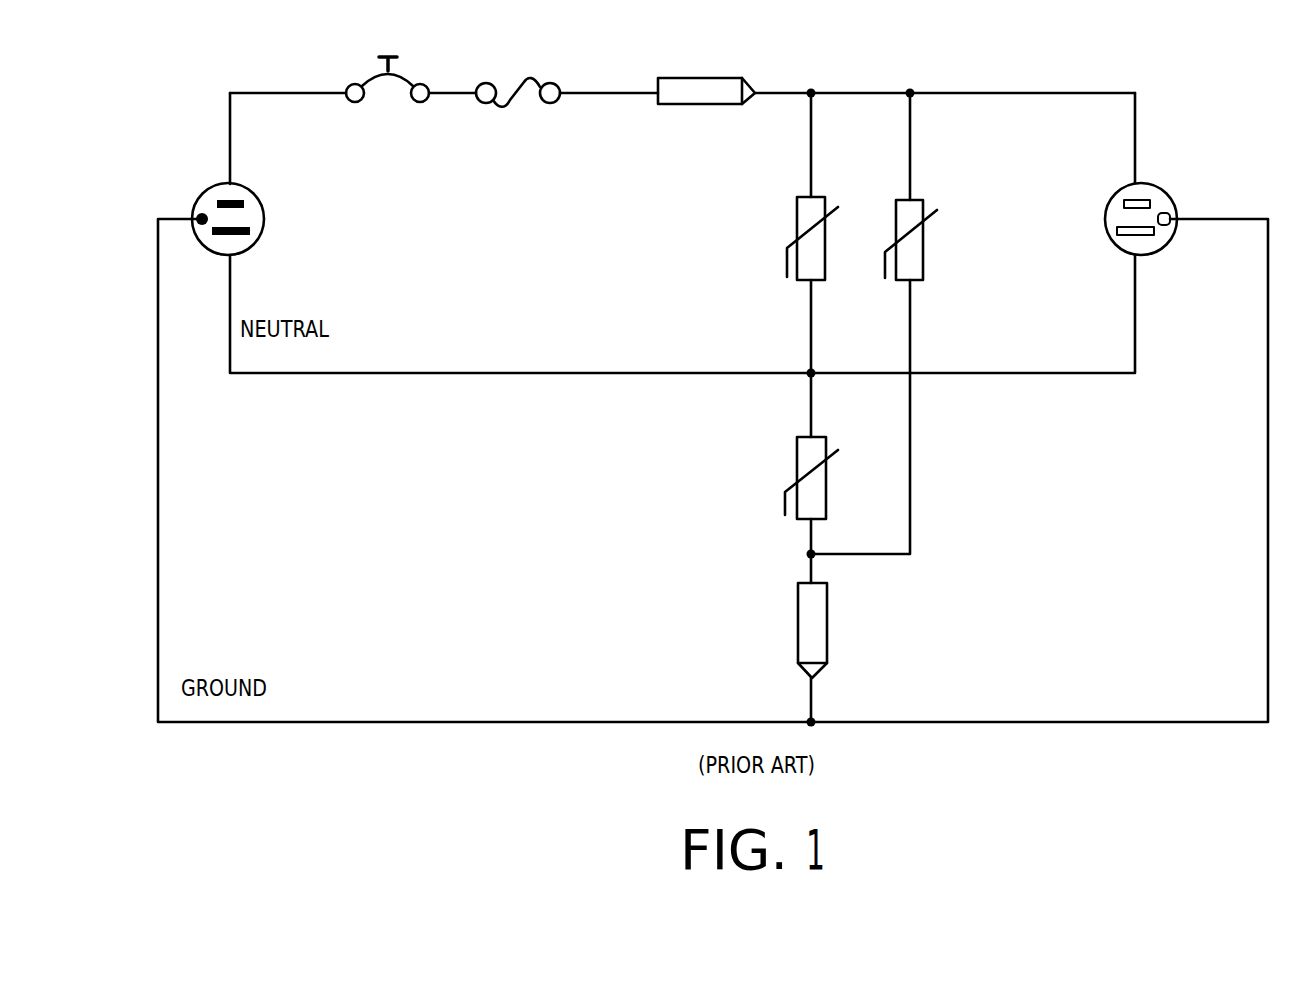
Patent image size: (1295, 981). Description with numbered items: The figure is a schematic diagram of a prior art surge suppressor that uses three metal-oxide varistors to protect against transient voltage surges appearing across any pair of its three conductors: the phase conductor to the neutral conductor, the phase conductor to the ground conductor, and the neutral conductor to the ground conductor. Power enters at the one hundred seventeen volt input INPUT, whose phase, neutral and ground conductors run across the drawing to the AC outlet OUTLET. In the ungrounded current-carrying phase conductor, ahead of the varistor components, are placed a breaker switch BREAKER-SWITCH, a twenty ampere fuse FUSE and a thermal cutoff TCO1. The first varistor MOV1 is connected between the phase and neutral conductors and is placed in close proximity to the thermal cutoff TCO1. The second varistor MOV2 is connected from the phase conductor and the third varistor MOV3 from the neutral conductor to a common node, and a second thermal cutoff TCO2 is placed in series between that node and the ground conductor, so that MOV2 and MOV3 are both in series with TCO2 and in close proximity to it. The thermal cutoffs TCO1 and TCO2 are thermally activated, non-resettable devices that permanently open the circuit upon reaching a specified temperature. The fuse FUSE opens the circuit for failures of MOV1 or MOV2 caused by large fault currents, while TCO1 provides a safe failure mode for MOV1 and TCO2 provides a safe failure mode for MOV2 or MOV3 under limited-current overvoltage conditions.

The breaker switch BREAKER-SWITCH is at (406, 62).
The fuse FUSE is at (519, 120).
The thermal cutoff TCO1 is at (706, 70).
The second thermal cutoff TCO2 is at (775, 630).
The metal-oxide-varistor MOV1 is at (772, 238).
The metal-oxide-varistor MOV2 is at (940, 240).
The metal-oxide-varistor MOV3 is at (770, 478).
The 117 volt input INPUT is at (308, 204).
The AC outlet OUTLET is at (1087, 207).